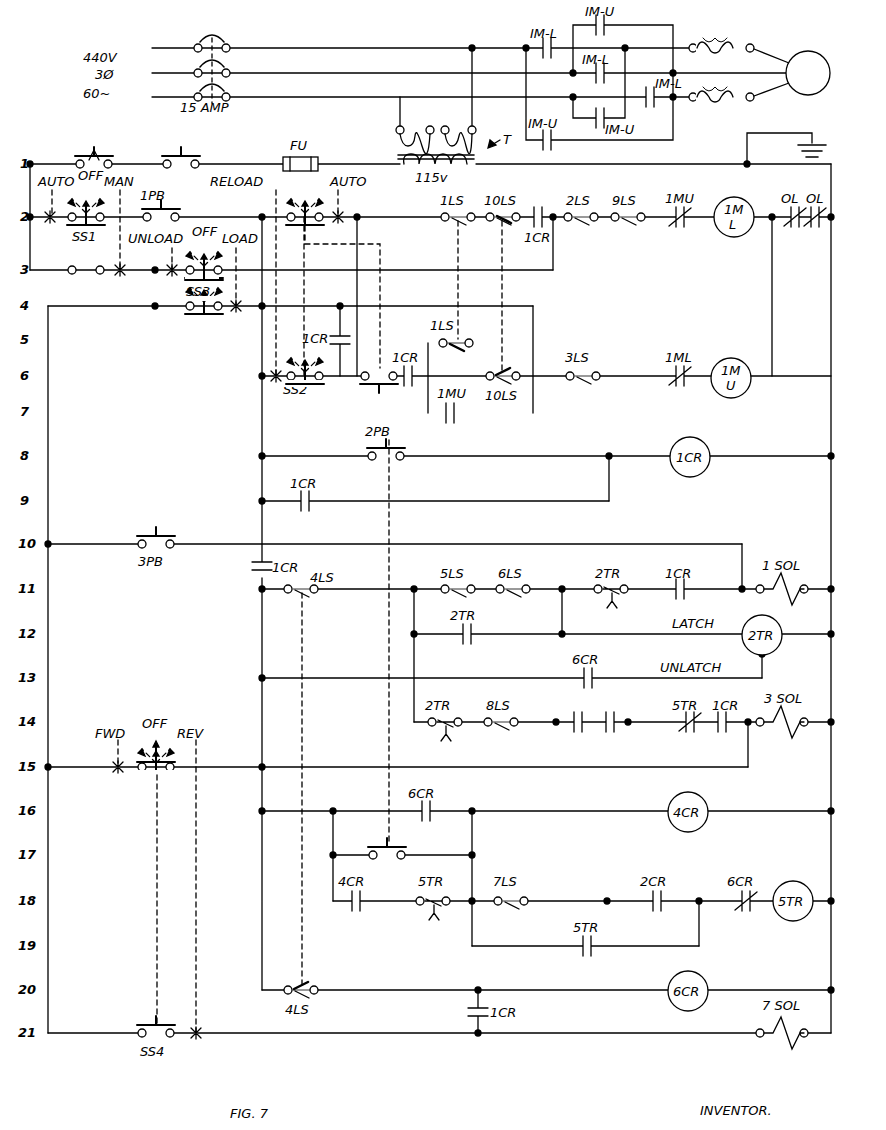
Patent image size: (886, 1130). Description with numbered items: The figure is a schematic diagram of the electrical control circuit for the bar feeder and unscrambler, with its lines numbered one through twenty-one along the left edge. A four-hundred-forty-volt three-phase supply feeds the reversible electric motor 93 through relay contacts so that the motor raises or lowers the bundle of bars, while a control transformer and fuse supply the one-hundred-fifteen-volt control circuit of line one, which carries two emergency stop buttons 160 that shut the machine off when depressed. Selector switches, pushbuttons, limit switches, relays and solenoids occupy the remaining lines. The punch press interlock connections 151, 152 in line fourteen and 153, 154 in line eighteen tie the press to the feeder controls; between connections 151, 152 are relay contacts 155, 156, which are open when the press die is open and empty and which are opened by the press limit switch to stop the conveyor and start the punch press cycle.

The emergency stop button 160 is at (100, 152).
The electric motor 93 is at (806, 85).
The punch press interlock connection 151 is at (556, 719).
The relay contact 155 is at (578, 728).
The relay contact 156 is at (612, 716).
The punch press interlock connection 152 is at (628, 726).
The punch press interlock connection 153 is at (607, 900).
The punch press interlock connection 154 is at (701, 905).